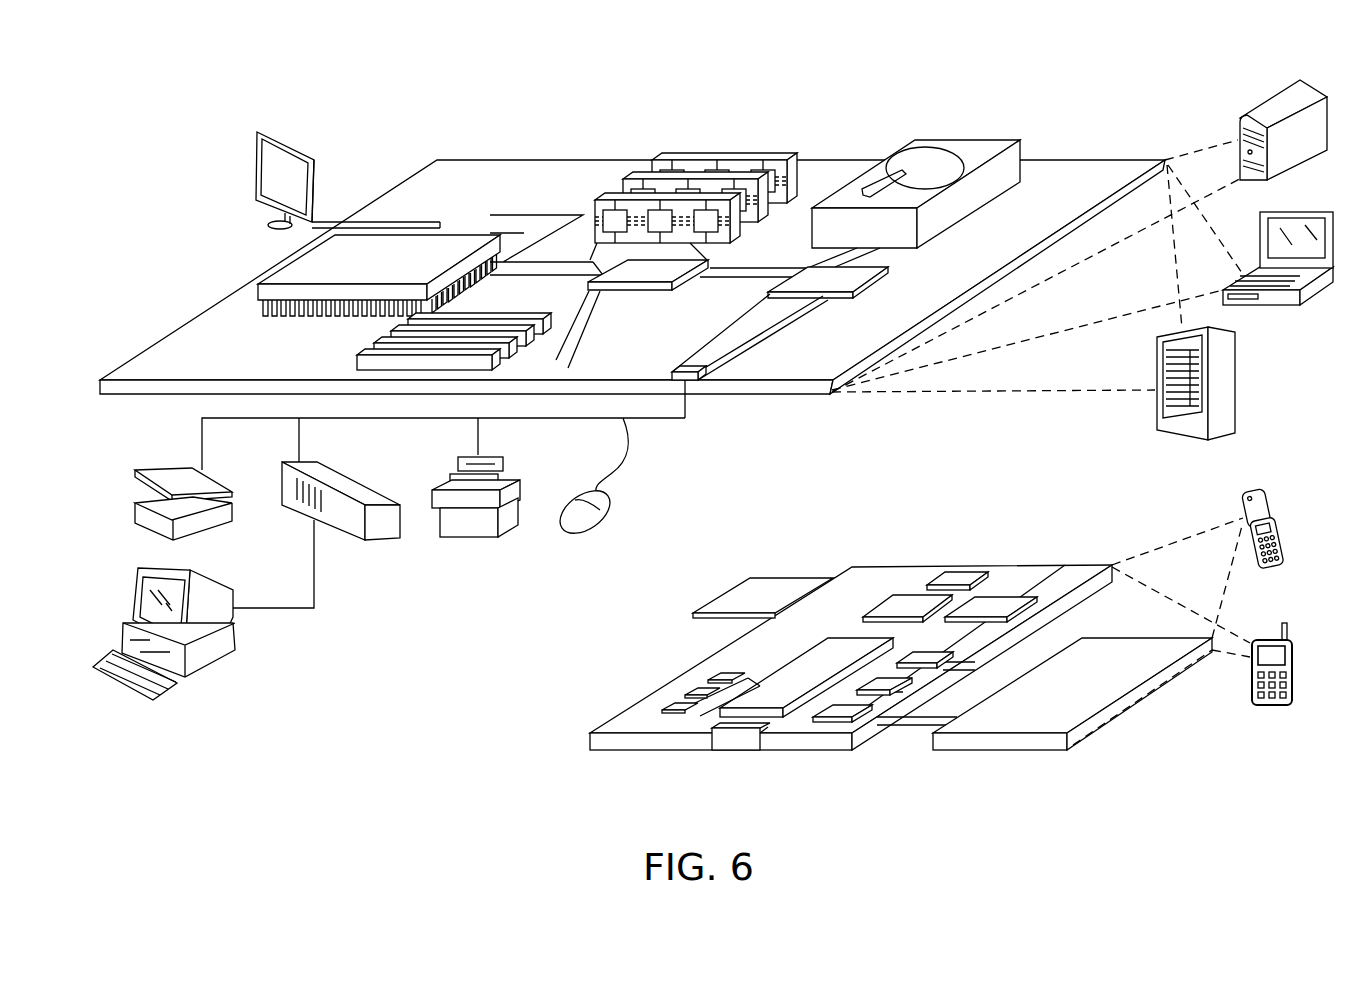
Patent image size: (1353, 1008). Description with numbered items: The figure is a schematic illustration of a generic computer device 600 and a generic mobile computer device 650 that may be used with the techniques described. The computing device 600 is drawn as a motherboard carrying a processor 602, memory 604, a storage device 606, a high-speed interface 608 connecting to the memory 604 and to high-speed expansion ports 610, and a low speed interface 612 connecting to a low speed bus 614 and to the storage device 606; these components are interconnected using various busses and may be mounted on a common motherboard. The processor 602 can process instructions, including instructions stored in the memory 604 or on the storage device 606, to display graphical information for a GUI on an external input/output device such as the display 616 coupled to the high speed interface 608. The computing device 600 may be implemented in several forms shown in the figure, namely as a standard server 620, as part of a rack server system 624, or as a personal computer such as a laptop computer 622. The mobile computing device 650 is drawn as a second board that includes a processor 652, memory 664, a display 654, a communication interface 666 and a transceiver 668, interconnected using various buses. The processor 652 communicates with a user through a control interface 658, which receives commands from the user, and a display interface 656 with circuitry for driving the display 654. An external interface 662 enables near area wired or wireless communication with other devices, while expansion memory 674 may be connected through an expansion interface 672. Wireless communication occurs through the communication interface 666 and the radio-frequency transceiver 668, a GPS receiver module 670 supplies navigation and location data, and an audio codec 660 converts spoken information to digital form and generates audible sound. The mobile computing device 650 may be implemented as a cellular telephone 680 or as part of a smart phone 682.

The computing device 600 is at (388, 108).
The processor 602 is at (283, 268).
The memory 604 is at (730, 155).
The storage device 606 is at (955, 138).
The high-speed interface 608 is at (660, 268).
The high-speed expansion ports 610 is at (383, 345).
The low speed interface 612 is at (803, 277).
The low speed bus 614 is at (693, 367).
The display 616 is at (263, 132).
The standard server 620 is at (1262, 108).
The laptop computer 622 is at (1312, 210).
The rack server system 624 is at (1235, 382).
The mobile computer device 650 is at (545, 760).
The processor 652 is at (777, 686).
The display 654 is at (1113, 653).
The display interface 656 is at (858, 708).
The control interface 658 is at (890, 682).
The audio codec 660 is at (927, 653).
The external interface 662 is at (737, 737).
The memory 664 is at (690, 691).
The communication interface 666 is at (907, 597).
The transceiver 668 is at (997, 598).
The GPS receiver module 670 is at (957, 573).
The expansion interface 672 is at (833, 576).
The expansion memory 674 is at (750, 576).
The cellular telephone 680 is at (1255, 487).
The smart phone 682 is at (1265, 638).